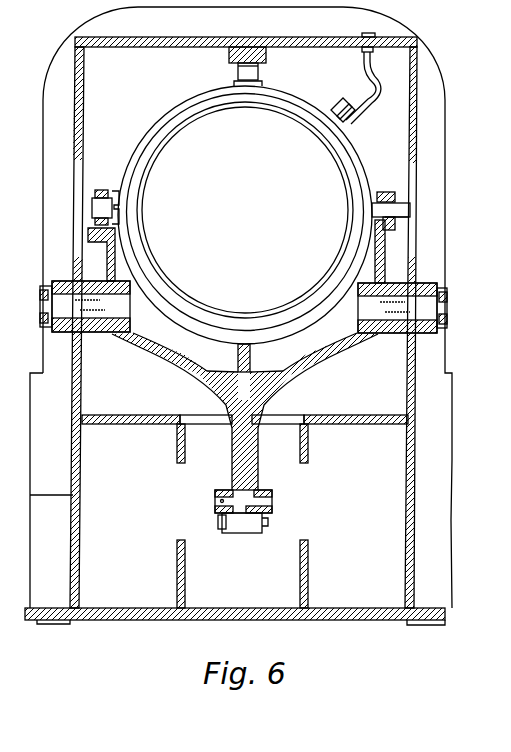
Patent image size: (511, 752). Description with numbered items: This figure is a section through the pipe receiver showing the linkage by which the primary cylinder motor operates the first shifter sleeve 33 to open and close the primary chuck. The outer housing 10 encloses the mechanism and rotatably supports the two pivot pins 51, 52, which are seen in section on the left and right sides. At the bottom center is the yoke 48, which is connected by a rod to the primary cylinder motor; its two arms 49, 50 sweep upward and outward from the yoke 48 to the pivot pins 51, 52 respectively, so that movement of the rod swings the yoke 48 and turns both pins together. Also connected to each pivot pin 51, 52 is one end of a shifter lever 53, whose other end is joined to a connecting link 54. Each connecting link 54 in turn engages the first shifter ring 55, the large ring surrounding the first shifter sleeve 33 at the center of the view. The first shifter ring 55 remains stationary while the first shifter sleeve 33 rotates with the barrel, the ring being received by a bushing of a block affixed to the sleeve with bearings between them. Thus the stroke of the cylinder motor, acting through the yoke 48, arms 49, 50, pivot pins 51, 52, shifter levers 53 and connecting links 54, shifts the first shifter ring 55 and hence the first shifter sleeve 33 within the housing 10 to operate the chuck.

The housing 10 is at (62, 58).
The first shifter ring 55 is at (196, 97).
The first shifter sleeve 33 is at (346, 247).
The connecting link 54 is at (101, 189).
The shifter lever 53 is at (107, 258).
The pivot pin 51 is at (47, 304).
The pivot pin 52 is at (423, 307).
The arm 49 is at (130, 342).
The arm 50 is at (350, 349).
The yoke 48 is at (232, 455).